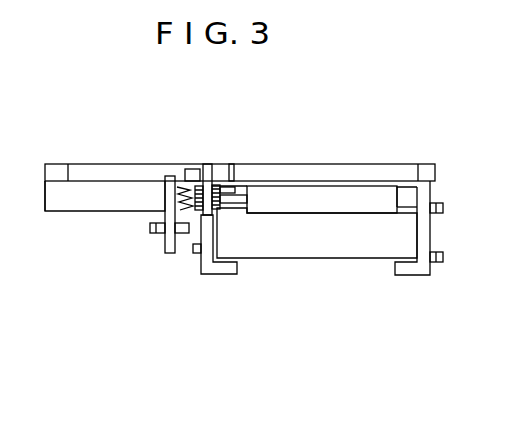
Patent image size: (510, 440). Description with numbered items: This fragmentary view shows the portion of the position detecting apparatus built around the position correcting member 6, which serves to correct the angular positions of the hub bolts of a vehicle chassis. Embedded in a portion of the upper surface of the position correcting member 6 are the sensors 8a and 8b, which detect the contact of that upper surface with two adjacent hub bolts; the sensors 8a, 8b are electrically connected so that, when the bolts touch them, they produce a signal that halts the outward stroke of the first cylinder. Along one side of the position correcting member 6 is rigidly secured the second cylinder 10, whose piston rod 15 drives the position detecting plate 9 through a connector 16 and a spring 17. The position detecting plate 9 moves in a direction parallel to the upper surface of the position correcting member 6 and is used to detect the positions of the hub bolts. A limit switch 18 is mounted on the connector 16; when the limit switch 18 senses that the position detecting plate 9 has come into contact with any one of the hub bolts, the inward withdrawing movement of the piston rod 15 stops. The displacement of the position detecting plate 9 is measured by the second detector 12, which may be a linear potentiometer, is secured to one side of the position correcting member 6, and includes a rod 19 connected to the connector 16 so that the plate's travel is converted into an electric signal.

The position correcting member 6 is at (83, 212).
The sensor 8a is at (100, 163).
The sensor 8b is at (368, 163).
The position detecting plate 9 is at (221, 167).
The second cylinder 10 is at (368, 258).
The second detector 12 is at (328, 214).
The piston rod 15 is at (193, 243).
The connector 16 is at (161, 237).
The spring 17 is at (185, 168).
The limit switch 18 is at (197, 168).
The rod 19 is at (227, 208).